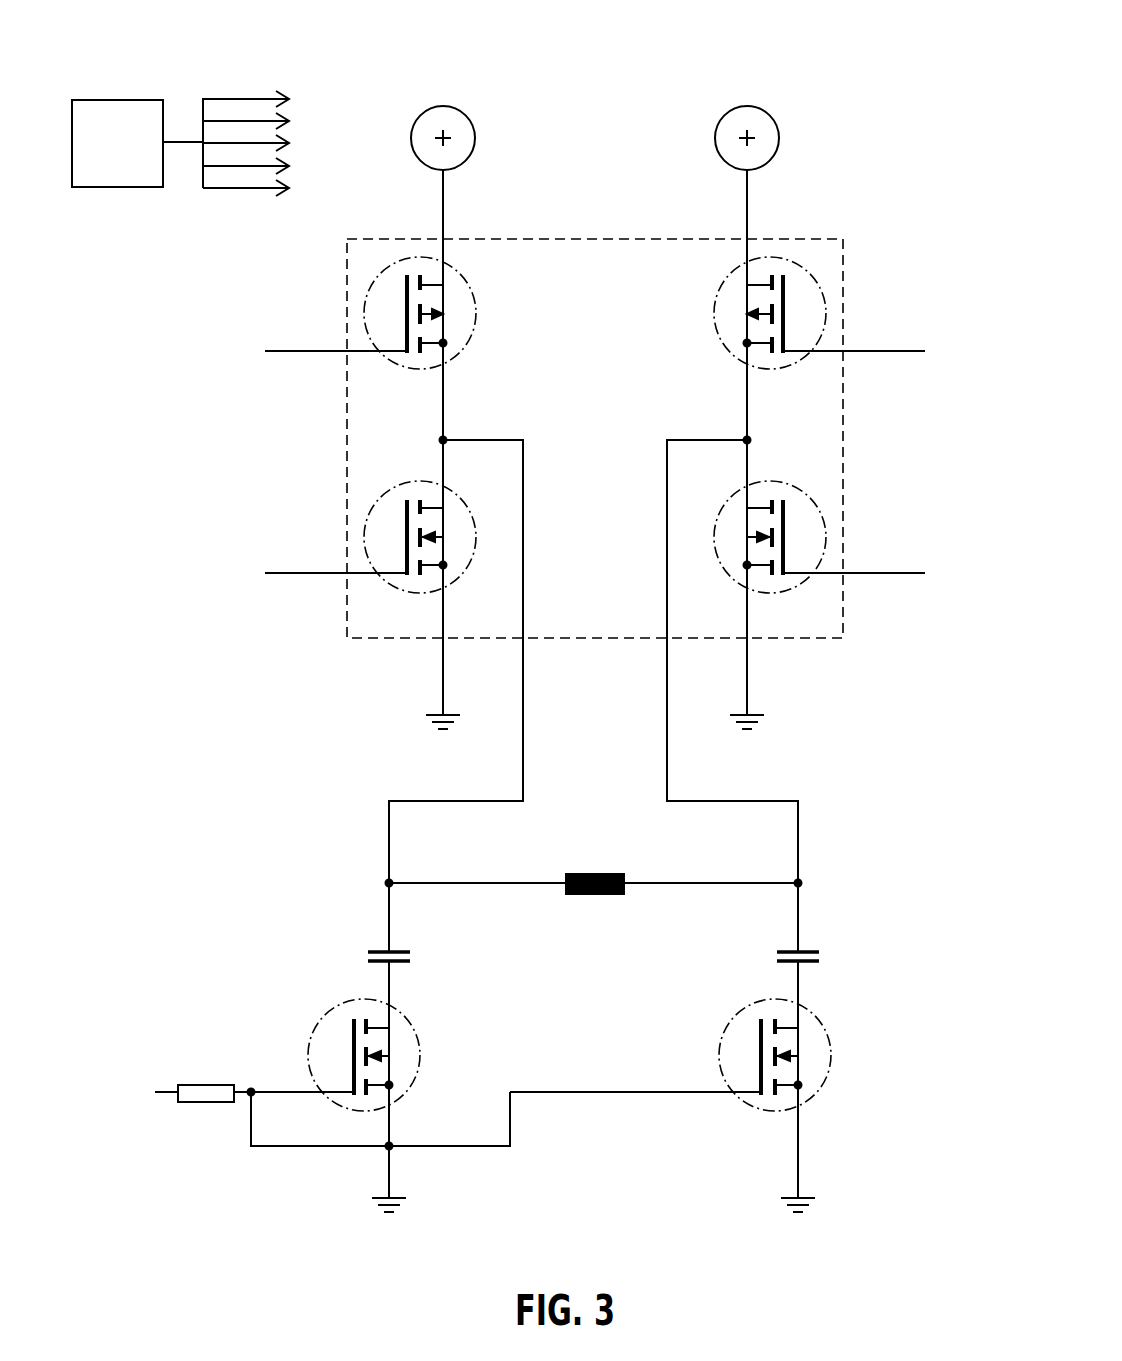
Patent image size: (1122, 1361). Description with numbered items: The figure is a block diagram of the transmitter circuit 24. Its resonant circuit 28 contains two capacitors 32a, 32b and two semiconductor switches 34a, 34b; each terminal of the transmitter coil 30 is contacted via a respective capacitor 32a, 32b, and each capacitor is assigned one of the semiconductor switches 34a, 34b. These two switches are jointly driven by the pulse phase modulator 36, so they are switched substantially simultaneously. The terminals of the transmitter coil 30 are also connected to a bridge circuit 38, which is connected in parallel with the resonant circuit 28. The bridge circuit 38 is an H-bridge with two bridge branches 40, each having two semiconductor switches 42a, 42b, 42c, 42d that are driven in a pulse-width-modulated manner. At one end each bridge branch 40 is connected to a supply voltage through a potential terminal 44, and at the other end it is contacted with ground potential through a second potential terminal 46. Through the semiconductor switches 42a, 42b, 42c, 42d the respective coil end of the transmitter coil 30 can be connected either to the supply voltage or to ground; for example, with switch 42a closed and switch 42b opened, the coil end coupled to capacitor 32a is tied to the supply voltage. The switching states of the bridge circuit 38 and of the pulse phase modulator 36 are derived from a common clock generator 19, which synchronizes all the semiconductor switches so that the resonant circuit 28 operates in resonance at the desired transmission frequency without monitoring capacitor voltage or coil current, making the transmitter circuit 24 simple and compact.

The clock generator 19 is at (118, 100).
The transmitter circuit 24 is at (855, 75).
The resonant circuit 28 is at (665, 1148).
The transmitter coil 30 is at (596, 874).
The capacitor 32a is at (368, 951).
The capacitor 32b is at (819, 951).
The semiconductor switch 34a is at (318, 1020).
The semiconductor switch 34b is at (832, 1057).
The pulse phase modulator 36 is at (206, 1085).
The bridge circuit 38 is at (594, 239).
The bridge branch 40 is at (268, 444).
The semiconductor switch 42a is at (364, 313).
The semiconductor switch 42b is at (364, 537).
The semiconductor switch 42c is at (826, 313).
The semiconductor switch 42d is at (826, 537).
The potential terminal 44 is at (443, 106).
The second potential terminal 46 is at (435, 716).